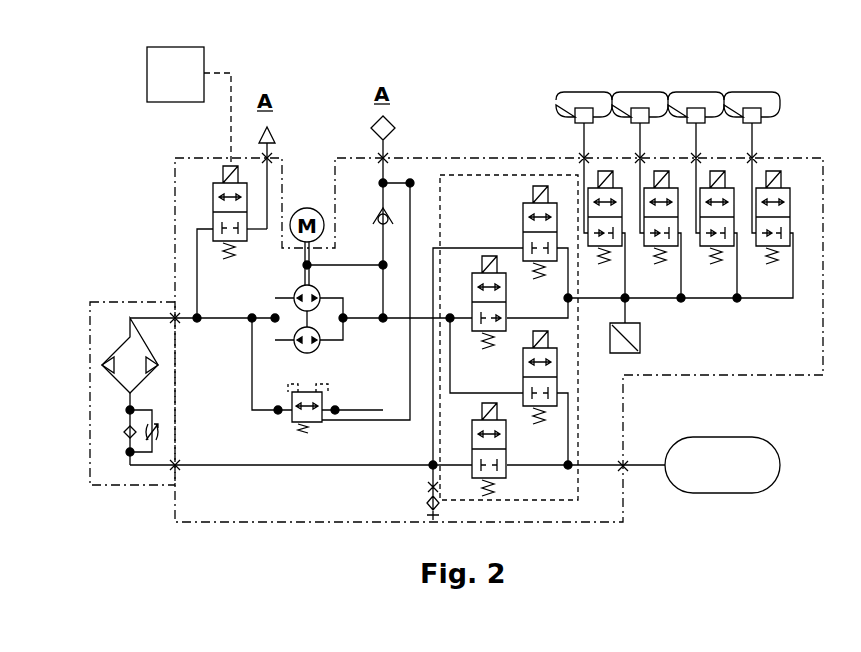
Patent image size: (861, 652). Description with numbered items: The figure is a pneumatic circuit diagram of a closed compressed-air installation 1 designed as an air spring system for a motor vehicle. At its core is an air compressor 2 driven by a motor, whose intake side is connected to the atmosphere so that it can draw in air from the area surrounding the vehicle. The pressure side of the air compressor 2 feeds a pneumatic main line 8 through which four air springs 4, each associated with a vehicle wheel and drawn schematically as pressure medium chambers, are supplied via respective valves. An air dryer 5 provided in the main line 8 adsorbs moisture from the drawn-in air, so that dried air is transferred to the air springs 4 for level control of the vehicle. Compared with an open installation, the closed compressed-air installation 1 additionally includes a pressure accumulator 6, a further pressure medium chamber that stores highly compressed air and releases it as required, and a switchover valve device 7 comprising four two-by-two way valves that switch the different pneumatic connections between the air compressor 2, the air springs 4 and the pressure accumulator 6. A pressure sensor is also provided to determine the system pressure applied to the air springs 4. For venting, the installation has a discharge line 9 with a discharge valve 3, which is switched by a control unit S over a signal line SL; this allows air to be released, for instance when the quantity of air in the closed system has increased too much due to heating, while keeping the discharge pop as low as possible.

The compressed-air installation 1 is at (445, 87).
The air compressor 2 is at (312, 347).
The discharge valve 3 is at (213, 199).
The air springs 4 is at (667, 78).
The air dryer 5 is at (103, 355).
The pressure accumulator 6 is at (758, 465).
The switchover valve device 7 is at (528, 175).
The pneumatic main line 8 is at (237, 318).
The discharge line 9 is at (197, 273).
The control unit S is at (175, 74).
The signal line SL is at (231, 137).